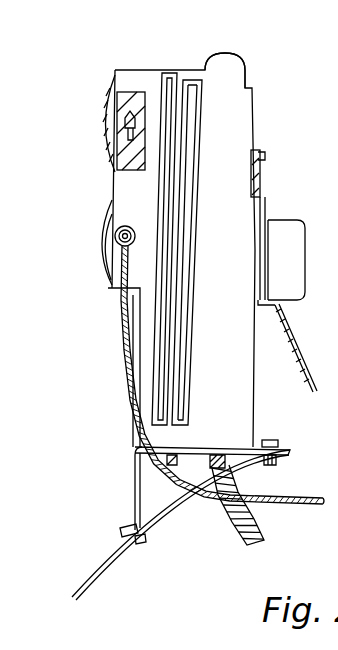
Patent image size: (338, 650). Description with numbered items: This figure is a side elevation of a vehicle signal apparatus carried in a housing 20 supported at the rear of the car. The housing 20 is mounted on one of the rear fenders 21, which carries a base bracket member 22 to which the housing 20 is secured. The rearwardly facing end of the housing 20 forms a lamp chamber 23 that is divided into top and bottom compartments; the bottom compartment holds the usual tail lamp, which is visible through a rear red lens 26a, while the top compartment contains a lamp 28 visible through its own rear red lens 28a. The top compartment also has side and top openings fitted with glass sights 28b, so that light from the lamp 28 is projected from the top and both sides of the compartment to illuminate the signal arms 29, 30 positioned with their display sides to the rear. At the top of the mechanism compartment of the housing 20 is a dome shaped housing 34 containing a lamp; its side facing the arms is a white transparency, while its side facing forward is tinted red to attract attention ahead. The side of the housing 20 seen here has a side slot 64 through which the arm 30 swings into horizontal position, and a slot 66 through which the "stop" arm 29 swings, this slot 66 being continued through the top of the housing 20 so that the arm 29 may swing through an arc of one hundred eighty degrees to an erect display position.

The housing 20 is at (202, 254).
The rear fender 21 is at (78, 583).
The base bracket member 22 is at (134, 485).
The lamp chamber 23 is at (116, 182).
The rear red lens 26a is at (99, 243).
The lamp 28 is at (133, 97).
The rear red lens 28a is at (103, 118).
The glass sights 28b is at (129, 99).
The signal arm 29 is at (162, 317).
The signal arm 30 is at (185, 345).
The dome shaped housing 34 is at (247, 66).
The side slot 64 is at (193, 212).
The slot 66 is at (153, 415).